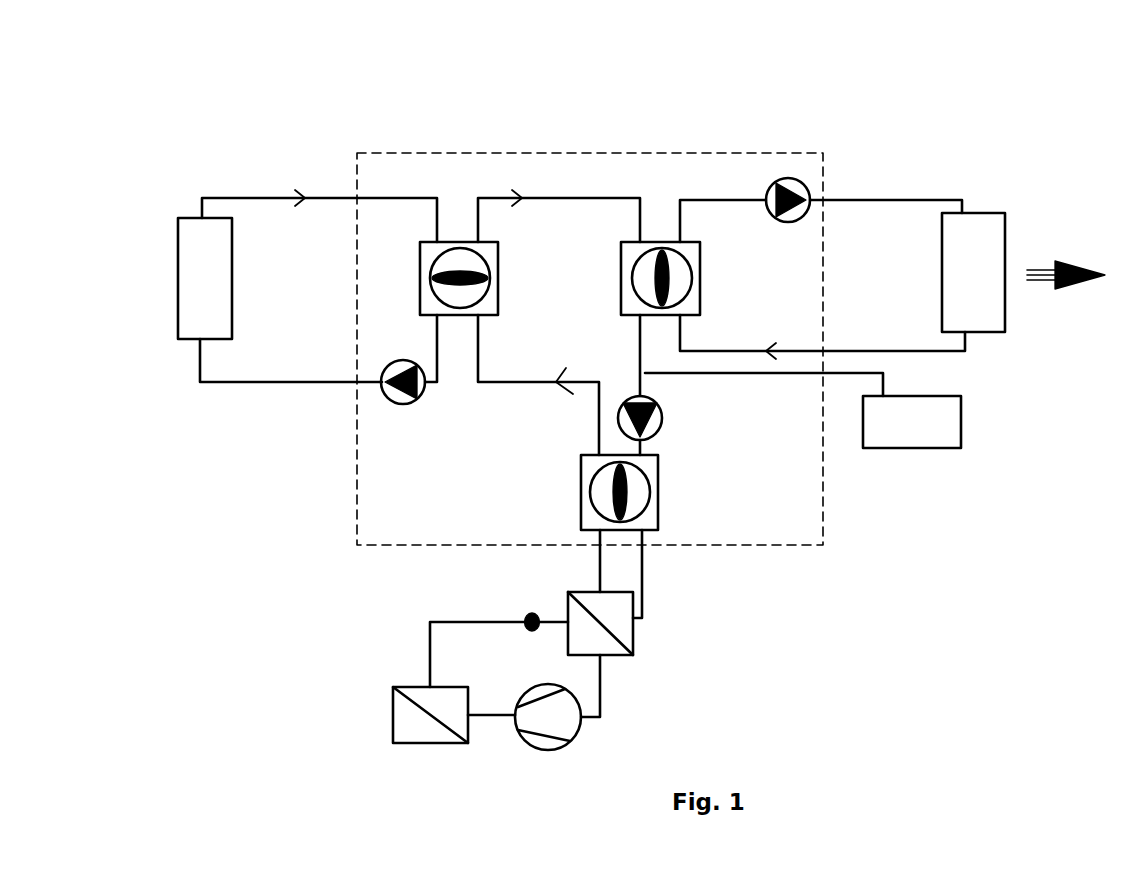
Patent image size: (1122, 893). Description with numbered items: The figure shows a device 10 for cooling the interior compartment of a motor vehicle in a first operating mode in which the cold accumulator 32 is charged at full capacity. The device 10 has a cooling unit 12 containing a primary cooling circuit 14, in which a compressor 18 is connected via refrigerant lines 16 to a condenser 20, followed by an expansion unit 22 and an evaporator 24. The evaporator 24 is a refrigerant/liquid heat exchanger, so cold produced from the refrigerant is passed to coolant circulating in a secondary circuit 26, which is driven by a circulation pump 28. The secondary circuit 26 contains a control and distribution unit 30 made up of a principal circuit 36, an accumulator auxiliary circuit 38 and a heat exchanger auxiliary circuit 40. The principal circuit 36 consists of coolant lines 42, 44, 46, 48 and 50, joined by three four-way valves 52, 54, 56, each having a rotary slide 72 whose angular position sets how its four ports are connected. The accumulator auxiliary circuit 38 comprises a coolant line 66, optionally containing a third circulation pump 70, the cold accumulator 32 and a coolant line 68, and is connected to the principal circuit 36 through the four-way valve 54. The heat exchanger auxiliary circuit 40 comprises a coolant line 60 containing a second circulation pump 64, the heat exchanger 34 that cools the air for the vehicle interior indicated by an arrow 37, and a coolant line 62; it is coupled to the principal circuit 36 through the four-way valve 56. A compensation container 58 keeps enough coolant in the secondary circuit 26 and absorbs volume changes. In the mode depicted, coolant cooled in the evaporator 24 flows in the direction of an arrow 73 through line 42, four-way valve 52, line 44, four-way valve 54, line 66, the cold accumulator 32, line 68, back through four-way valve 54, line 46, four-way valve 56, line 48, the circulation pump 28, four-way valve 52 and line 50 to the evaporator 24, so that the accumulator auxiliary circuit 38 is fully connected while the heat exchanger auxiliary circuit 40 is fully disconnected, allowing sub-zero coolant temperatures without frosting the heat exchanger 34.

The device 10 is at (236, 563).
The cooling unit 12 is at (678, 694).
The primary cooling circuit 14 is at (470, 605).
The refrigerant lines 16 is at (603, 695).
The compressor 18 is at (548, 718).
The condenser 20 is at (408, 723).
The expansion unit 22 is at (530, 614).
The evaporator 24 is at (620, 640).
The secondary circuit 26 is at (492, 112).
The circulation pump 28 is at (658, 415).
The control and distribution unit 30 is at (678, 153).
The cold accumulator 32 is at (192, 277).
The heat exchanger 34 is at (993, 303).
The principal circuit 36 is at (611, 187).
The arrow 37 is at (1047, 268).
The accumulator auxiliary circuit 38 is at (228, 190).
The heat exchanger auxiliary circuit 40 is at (870, 188).
The coolant line 42 is at (598, 568).
The coolant line 44 is at (530, 383).
The coolant line 46 is at (573, 200).
The coolant line 48 is at (638, 378).
The coolant line 50 is at (648, 572).
The four-way valve 52 is at (580, 480).
The four-way valve 54 is at (500, 272).
The four-way valve 56 is at (620, 287).
The compensation container 58 is at (884, 430).
The coolant line 60 is at (920, 198).
The coolant line 62 is at (865, 351).
The second circulation pump 64 is at (789, 184).
The coolant line 66 is at (295, 383).
The coolant line 68 is at (335, 198).
The third circulation pump 70 is at (396, 364).
The rotary slide 72 is at (460, 270).
The arrow 73 is at (561, 390).